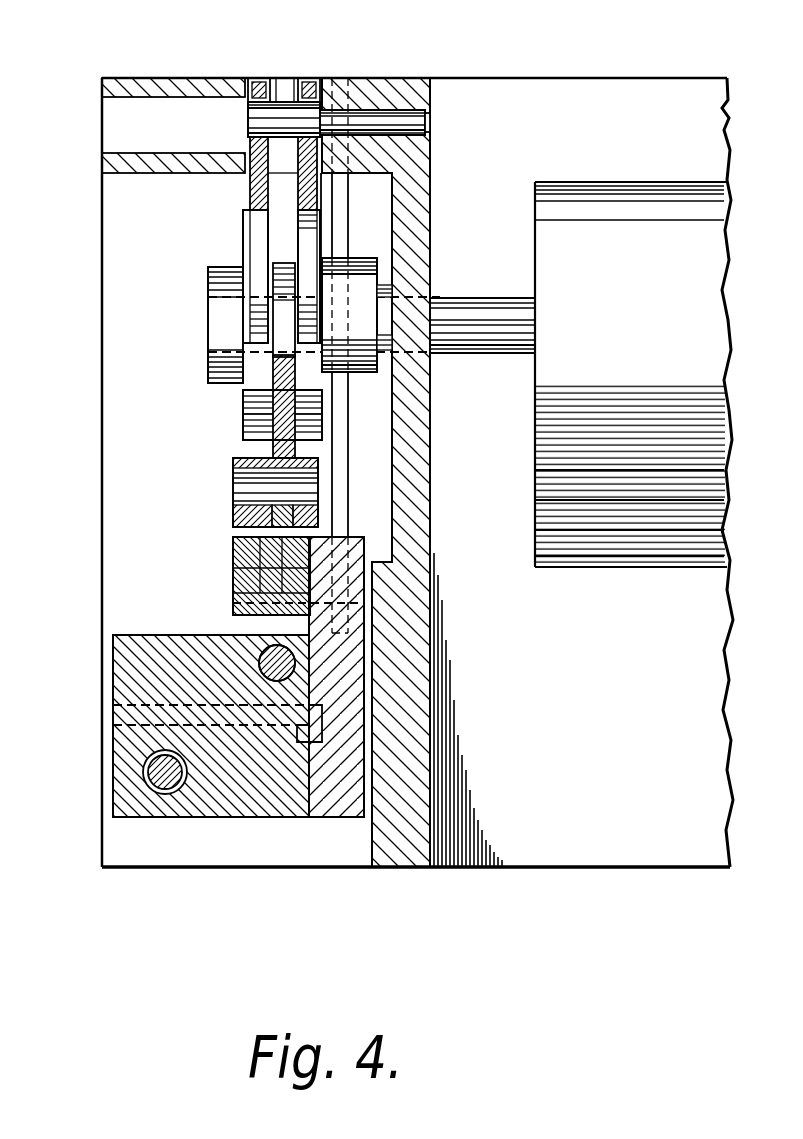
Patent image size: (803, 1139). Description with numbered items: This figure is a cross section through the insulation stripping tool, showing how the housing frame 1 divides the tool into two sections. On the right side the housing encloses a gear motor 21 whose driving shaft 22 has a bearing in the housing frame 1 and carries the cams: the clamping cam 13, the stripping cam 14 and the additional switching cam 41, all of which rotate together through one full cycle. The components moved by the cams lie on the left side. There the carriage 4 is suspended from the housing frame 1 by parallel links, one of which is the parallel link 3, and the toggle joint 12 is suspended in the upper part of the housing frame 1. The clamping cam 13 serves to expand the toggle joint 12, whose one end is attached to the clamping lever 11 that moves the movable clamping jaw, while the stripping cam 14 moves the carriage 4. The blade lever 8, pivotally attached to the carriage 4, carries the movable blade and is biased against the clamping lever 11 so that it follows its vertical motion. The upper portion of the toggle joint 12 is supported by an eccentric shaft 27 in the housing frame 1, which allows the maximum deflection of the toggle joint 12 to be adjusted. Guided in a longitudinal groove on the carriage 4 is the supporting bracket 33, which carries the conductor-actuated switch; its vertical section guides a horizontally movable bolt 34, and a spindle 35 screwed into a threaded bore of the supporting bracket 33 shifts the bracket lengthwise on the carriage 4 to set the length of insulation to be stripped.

The housing frame 1 is at (410, 832).
The parallel link 3 is at (338, 455).
The carriage 4 is at (330, 800).
The blade lever 8 is at (233, 553).
The clamping lever 11 is at (233, 513).
The toggle joint 12 is at (300, 238).
The clamping cam 13 is at (360, 272).
The stripping cam 14 is at (243, 410).
The gear motor 21 is at (690, 258).
The driving shaft 22 is at (475, 310).
The eccentric shaft 27 is at (283, 118).
The supporting bracket 33 is at (127, 748).
The bolt 34 is at (262, 665).
The spindle 35 is at (160, 775).
The switching cam 41 is at (208, 362).